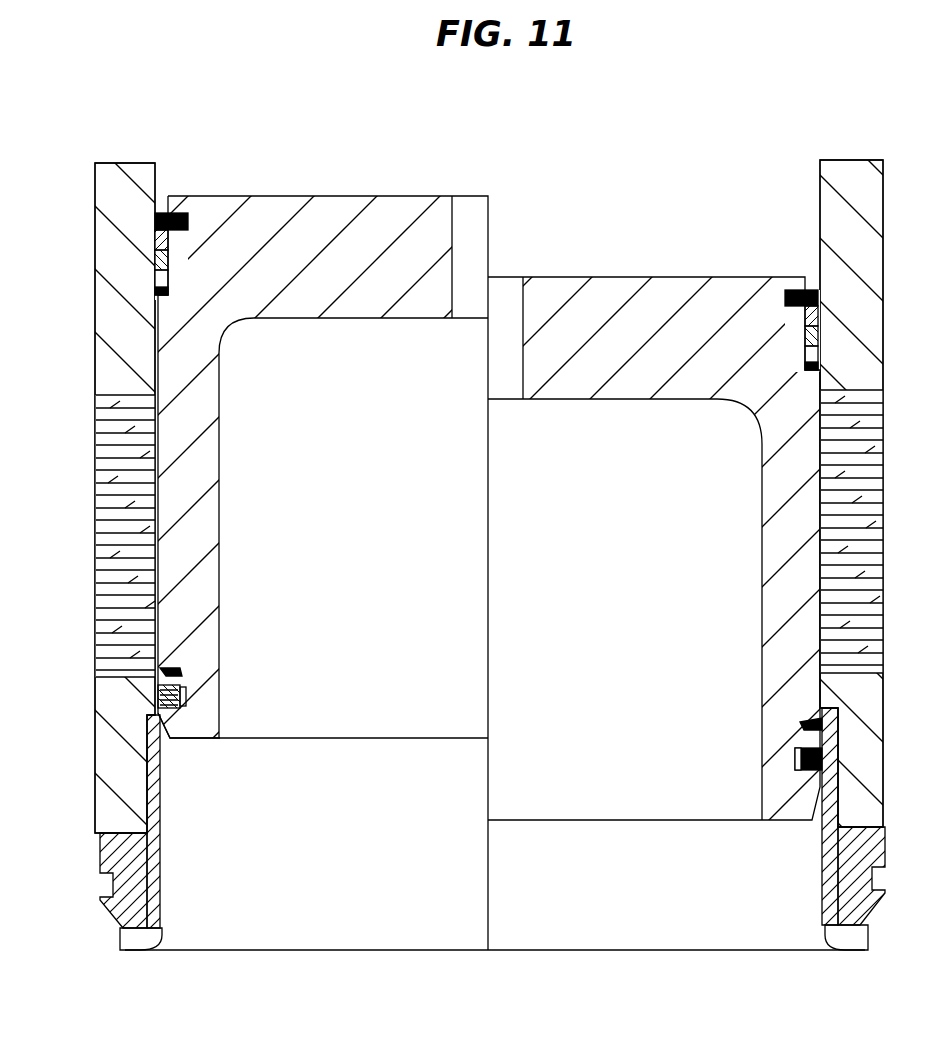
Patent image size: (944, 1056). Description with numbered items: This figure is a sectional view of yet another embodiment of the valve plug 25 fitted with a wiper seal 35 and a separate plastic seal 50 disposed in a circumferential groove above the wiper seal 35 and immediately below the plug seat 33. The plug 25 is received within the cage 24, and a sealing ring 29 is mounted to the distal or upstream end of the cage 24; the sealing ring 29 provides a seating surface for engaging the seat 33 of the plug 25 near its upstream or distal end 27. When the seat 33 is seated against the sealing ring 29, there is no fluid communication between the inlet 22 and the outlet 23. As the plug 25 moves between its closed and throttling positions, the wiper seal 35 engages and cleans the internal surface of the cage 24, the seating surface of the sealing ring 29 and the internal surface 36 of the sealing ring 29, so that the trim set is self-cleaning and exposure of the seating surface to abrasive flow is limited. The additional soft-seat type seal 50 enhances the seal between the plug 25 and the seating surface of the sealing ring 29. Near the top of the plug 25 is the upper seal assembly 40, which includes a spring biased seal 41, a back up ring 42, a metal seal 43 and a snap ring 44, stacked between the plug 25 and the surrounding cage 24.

The inlet 22 is at (737, 1024).
The outlet 23 is at (75, 572).
The cage 24 is at (95, 517).
The valve plug 25 is at (359, 173).
The upstream or distal end 27 is at (186, 742).
The sealing ring 29 is at (163, 915).
The seat 33 is at (162, 665).
The wiper seal 35 is at (182, 698).
The internal surface of the sealing ring 36 is at (162, 800).
The upper seal assembly 40 is at (432, 245).
The spring biased seal 41 is at (156, 288).
The back up ring 42 is at (156, 259).
The metal seal 43 is at (156, 242).
The snap ring 44 is at (156, 221).
The additional seal 50 is at (185, 688).